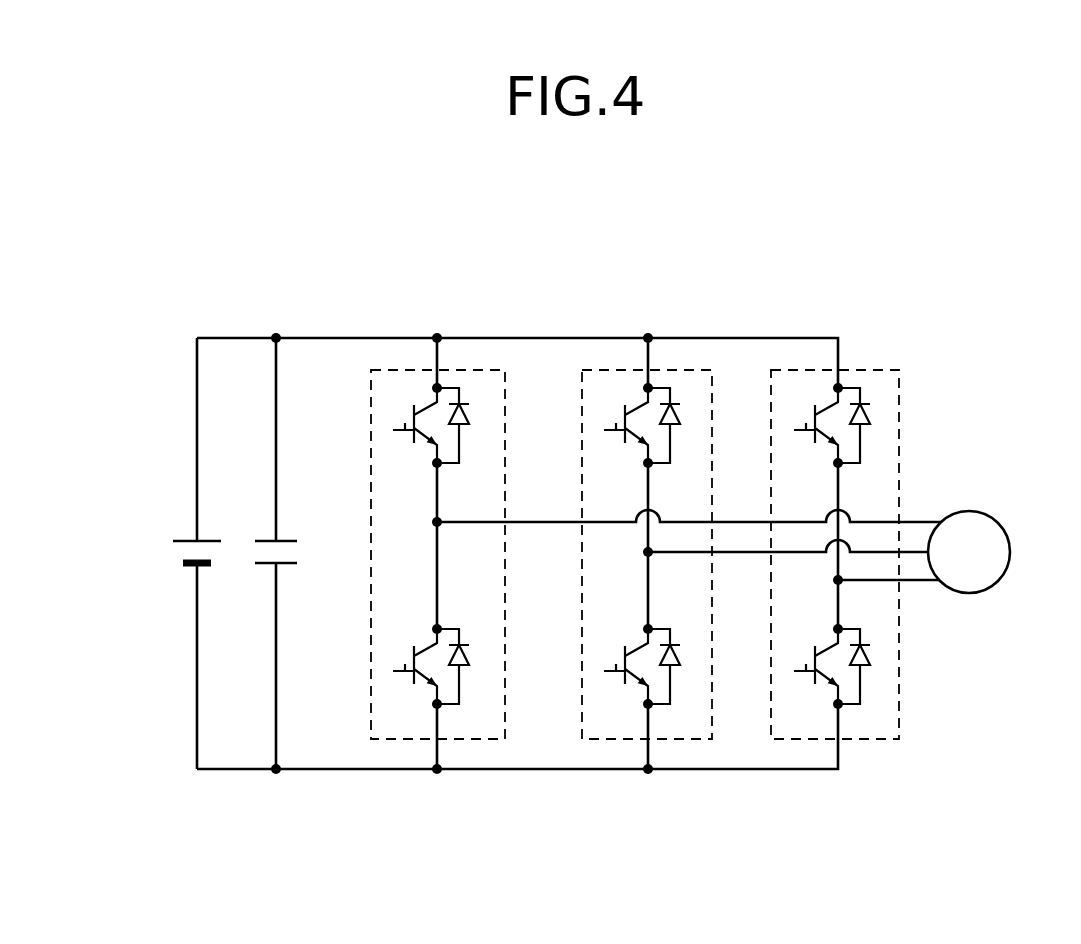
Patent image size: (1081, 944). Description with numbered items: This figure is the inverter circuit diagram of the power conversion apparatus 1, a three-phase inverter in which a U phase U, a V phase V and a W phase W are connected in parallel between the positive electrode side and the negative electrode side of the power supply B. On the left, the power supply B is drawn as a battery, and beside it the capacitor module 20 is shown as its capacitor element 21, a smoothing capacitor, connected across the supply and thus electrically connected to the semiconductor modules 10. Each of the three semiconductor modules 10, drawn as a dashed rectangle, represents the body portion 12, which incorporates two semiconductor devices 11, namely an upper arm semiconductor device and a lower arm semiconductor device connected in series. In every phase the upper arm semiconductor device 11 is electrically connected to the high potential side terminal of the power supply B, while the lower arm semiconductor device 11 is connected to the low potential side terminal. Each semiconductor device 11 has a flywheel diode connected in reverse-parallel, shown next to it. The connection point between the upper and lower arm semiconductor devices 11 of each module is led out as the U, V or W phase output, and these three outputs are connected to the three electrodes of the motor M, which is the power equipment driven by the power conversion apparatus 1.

The power conversion apparatus 1 is at (792, 245).
The semiconductor module 10 is at (664, 534).
The body portion 12 is at (592, 363).
The semiconductor device 11 is at (415, 398).
The capacitor module 20 is at (182, 553).
The capacitor element 21 is at (260, 530).
The power supply B is at (188, 532).
The motor M is at (973, 510).
The U phase U is at (458, 364).
The V phase V is at (692, 363).
The W phase W is at (775, 360).